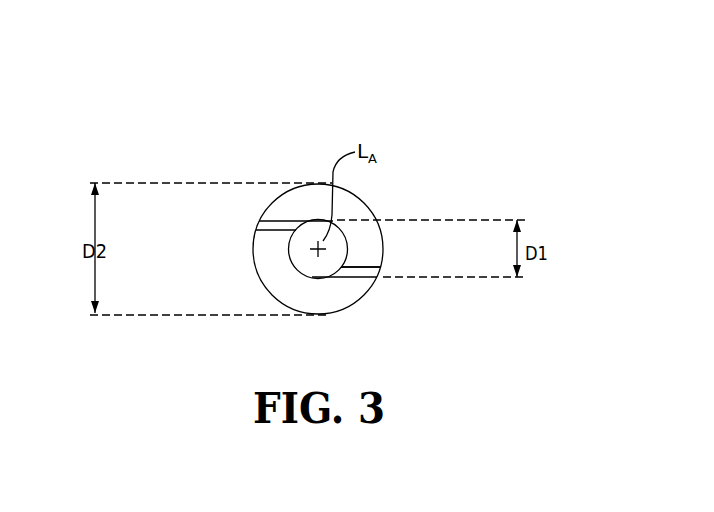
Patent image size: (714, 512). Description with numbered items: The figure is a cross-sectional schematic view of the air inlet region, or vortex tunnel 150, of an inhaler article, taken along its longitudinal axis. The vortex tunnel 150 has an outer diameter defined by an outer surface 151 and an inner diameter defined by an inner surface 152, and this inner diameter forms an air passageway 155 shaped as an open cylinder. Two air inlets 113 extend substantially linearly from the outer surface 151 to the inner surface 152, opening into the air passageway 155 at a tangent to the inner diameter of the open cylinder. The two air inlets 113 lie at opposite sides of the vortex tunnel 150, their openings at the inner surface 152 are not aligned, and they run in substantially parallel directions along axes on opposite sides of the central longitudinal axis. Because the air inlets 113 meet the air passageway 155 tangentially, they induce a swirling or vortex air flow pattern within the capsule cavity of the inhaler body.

The vortex tunnel 150 is at (328, 137).
The outer surface 151 is at (279, 199).
The inner surface 152 is at (318, 277).
The air inlets 113 is at (258, 230).
The air passageway 155 is at (333, 275).